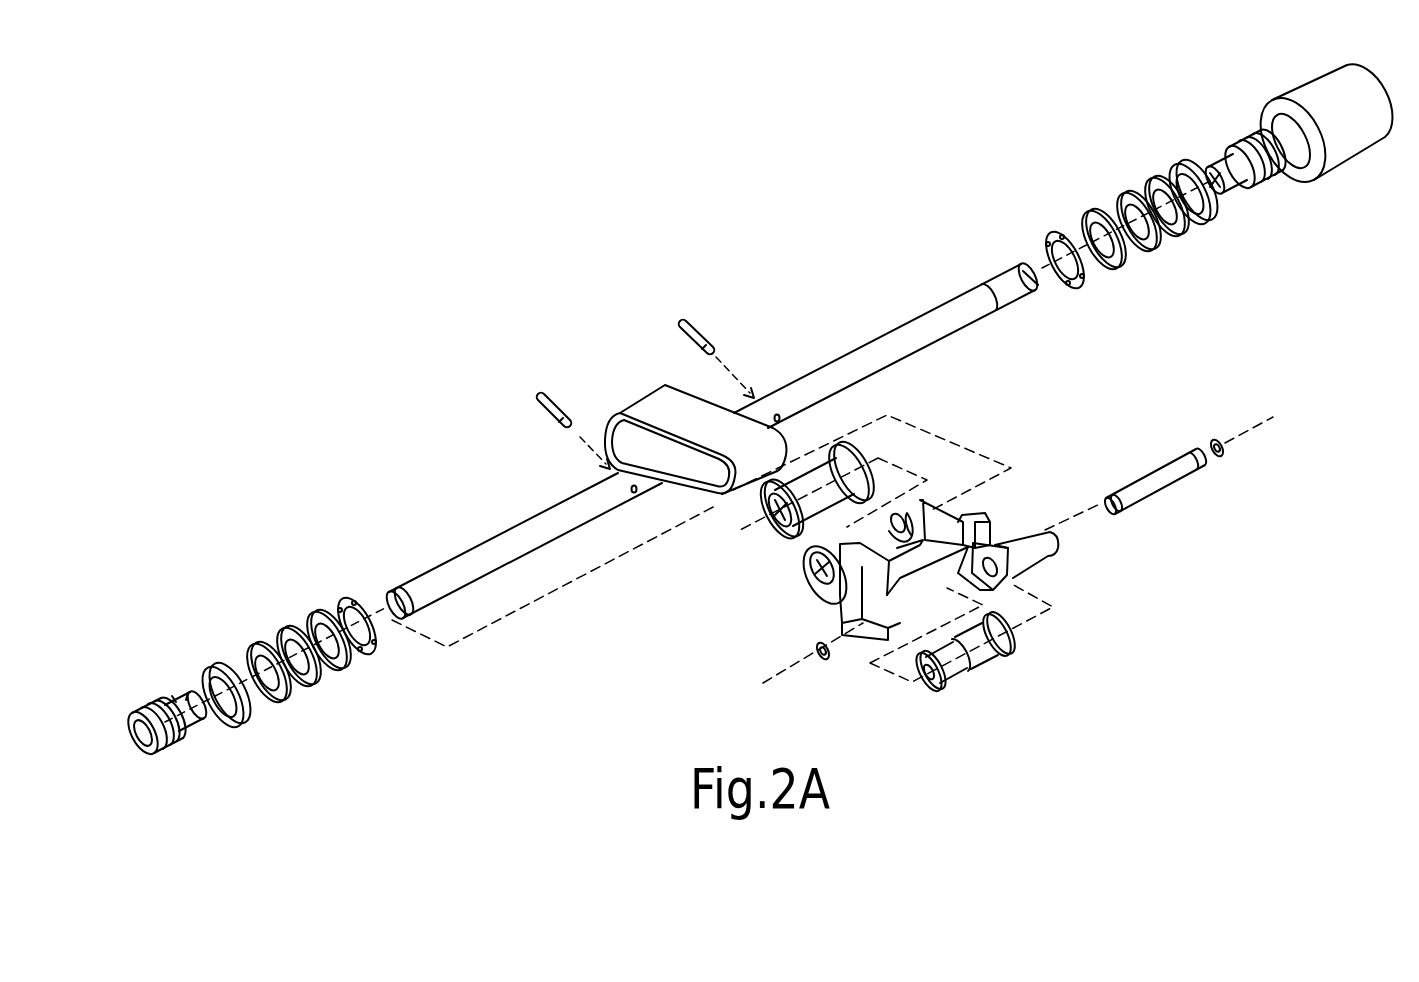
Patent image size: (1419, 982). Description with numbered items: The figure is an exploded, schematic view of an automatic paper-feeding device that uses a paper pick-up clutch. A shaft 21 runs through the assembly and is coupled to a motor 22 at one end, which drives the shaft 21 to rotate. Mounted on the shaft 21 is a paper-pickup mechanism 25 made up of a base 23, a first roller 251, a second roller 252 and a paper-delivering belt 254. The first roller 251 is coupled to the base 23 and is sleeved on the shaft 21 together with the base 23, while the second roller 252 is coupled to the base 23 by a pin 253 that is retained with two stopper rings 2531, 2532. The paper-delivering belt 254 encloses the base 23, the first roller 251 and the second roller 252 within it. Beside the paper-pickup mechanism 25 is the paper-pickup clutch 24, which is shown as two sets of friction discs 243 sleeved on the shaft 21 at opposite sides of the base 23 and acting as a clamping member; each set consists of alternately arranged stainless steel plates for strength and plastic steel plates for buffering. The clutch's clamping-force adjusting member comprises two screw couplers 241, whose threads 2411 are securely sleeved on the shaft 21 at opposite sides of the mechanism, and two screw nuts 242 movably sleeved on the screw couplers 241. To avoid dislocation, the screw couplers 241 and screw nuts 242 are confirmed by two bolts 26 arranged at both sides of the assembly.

The shaft 21 is at (474, 550).
The motor 22 is at (1315, 90).
The base 23 is at (872, 645).
The paper-pickup clutch 24 is at (703, 471).
The screw coupler 241 is at (703, 452).
The threads 2411 is at (175, 685).
The screw nut 242 is at (253, 700).
The friction discs 243 is at (343, 587).
The paper-pickup mechanism 25 is at (926, 547).
The first roller 251 is at (780, 533).
The second roller 252 is at (957, 663).
The pin 253 is at (1157, 480).
The stopper ring 2531 is at (1228, 455).
The stopper ring 2532 is at (821, 656).
The paper-delivering belt 254 is at (655, 402).
The bolt 26 is at (693, 322).